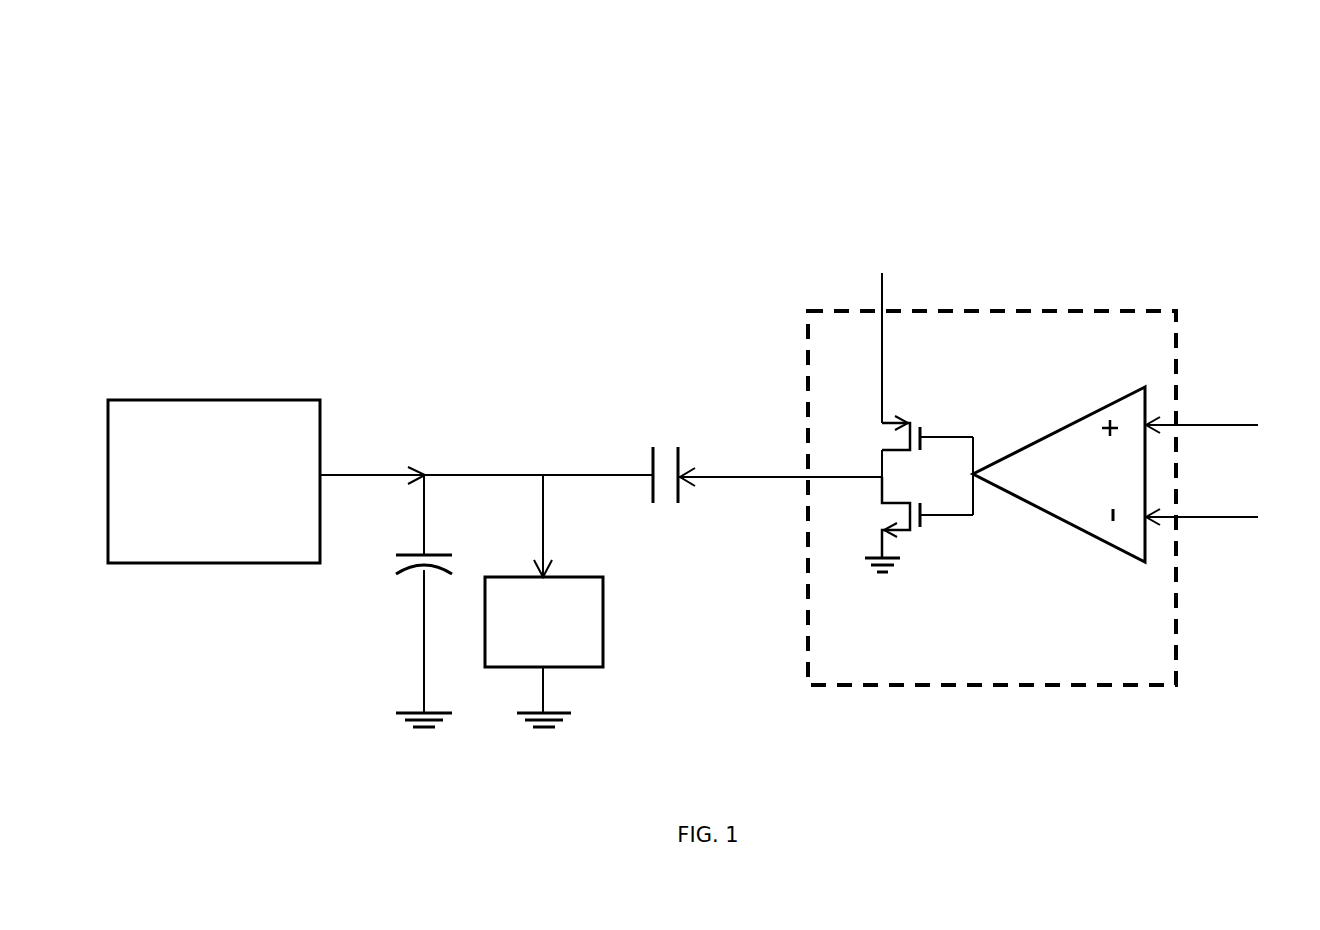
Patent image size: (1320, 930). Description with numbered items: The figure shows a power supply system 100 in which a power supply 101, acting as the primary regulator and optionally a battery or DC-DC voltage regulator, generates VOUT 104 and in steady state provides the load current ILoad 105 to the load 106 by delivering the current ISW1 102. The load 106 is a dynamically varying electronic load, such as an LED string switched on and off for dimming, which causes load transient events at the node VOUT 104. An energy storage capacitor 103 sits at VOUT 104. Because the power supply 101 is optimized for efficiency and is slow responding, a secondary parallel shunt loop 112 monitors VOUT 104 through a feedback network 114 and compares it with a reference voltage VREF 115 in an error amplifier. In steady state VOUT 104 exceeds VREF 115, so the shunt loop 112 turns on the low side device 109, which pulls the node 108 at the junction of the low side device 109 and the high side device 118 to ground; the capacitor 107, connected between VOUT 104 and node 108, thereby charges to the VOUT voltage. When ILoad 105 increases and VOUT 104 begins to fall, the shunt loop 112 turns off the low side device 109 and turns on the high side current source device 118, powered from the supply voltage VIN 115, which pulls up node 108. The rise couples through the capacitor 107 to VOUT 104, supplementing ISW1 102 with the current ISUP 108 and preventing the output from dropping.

The power supply system 100 is at (1289, 136).
The power supply 101 is at (210, 398).
The current ISW1 102 is at (365, 430).
The energy storage capacitor 103 is at (383, 568).
The VOUT 104 is at (453, 473).
The load current ILoad 105 is at (607, 515).
The load 106 is at (610, 618).
The capacitor 107 is at (663, 432).
The node 108 is at (730, 427).
The low side device 109 is at (872, 513).
The shunt loop 112 is at (1013, 295).
The feedback network 114 is at (1210, 555).
The reference voltage VREF 115 is at (876, 232).
The high side device 118 is at (878, 442).